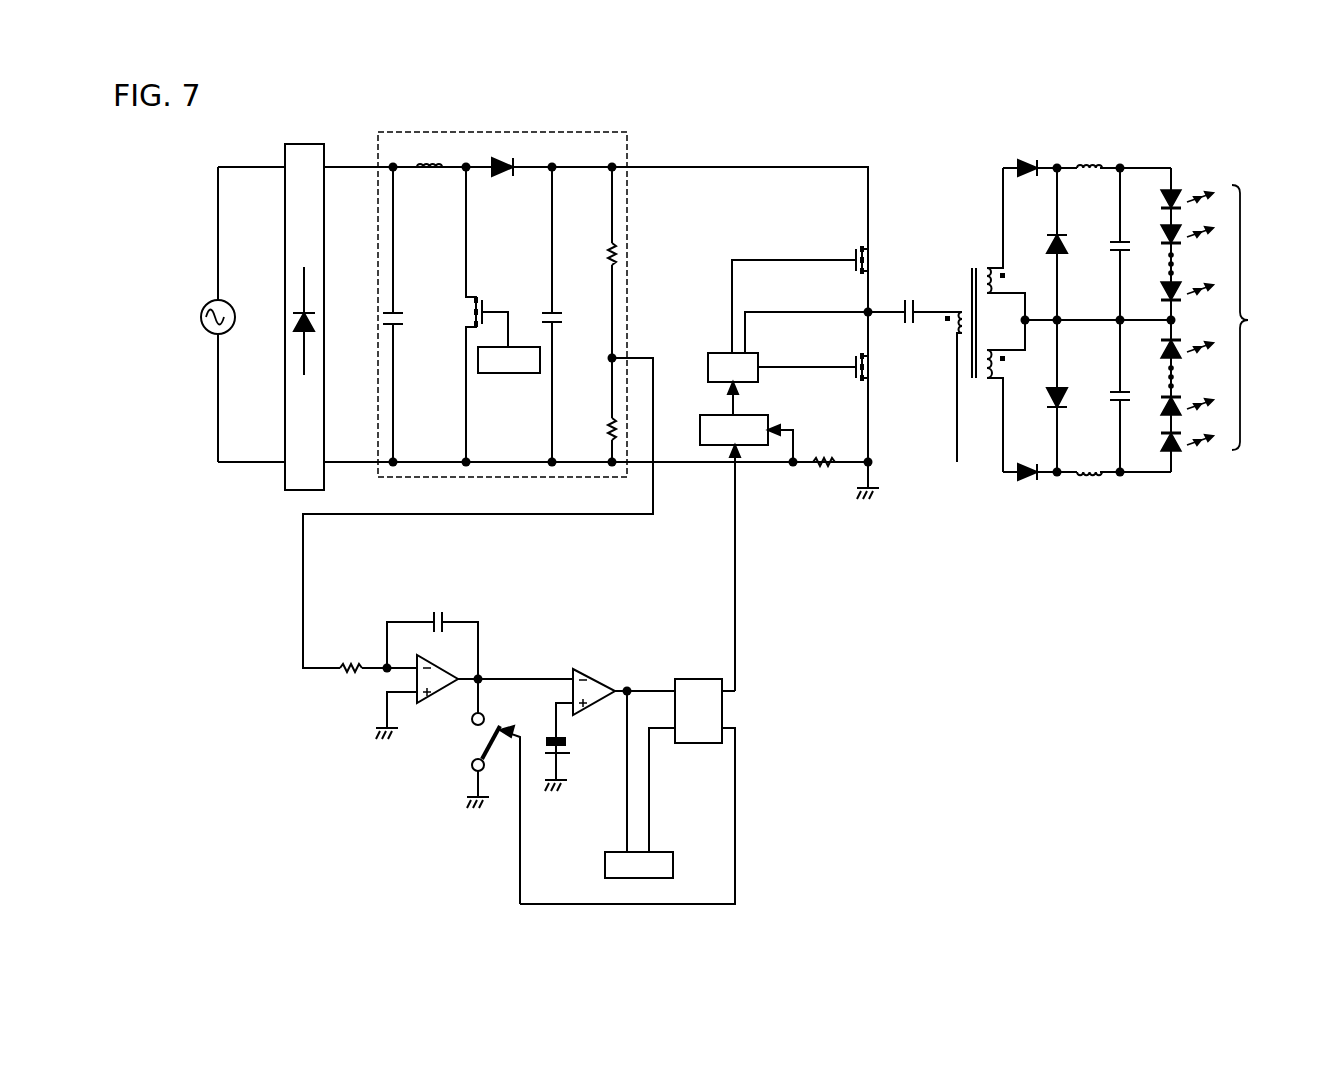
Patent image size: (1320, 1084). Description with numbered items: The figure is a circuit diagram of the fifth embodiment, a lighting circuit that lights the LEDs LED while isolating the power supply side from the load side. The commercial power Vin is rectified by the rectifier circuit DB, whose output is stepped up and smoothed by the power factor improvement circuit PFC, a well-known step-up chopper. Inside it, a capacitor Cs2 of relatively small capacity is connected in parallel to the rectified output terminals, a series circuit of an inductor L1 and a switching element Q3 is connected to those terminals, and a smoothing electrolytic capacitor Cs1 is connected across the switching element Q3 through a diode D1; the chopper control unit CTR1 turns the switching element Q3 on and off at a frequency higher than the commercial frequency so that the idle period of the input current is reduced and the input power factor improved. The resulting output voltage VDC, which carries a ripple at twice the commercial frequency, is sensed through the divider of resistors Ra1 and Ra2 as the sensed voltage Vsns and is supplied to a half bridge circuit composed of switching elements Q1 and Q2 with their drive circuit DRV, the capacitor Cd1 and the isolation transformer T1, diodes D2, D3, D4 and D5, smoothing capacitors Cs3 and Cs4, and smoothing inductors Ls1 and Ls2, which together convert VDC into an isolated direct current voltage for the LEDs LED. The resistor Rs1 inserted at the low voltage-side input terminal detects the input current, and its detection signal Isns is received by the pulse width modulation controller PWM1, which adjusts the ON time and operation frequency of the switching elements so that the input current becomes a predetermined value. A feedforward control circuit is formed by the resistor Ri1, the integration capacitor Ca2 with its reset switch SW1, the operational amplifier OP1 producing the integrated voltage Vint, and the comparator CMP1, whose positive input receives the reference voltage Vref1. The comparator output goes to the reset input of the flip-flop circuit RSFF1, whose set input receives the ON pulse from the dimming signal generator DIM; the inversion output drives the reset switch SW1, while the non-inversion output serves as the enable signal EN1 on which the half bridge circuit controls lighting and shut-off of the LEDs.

The commercial power Vin is at (199, 317).
The rectifier circuit DB is at (304, 306).
The power factor improvement circuit PFC is at (502, 294).
The capacitor Cs2 is at (408, 314).
The inductor L1 is at (429, 153).
The diode D1 is at (509, 158).
The switching element Q3 is at (473, 314).
The chopper control unit CTR1 is at (509, 360).
The electrolytic capacitor Cs1 is at (567, 314).
The resistor Ra1 is at (594, 262).
The resistor Ra2 is at (594, 410).
The output voltage VDC is at (612, 167).
The sensed voltage Vsns is at (486, 503).
The switching element Q1 is at (800, 288).
The switching element Q2 is at (813, 357).
The drive circuit DRV is at (733, 367).
The pulse width modulation controller PWM1 is at (734, 413).
The sensed current Isns is at (798, 436).
The enable signal EN1 is at (715, 568).
The resistor Rs1 is at (830, 451).
The capacitor Cd1 is at (915, 300).
The isolation transformer T1 is at (985, 320).
The diode D2 is at (1040, 157).
The smoothing inductor Ls1 is at (1123, 153).
The diode D3 is at (1043, 244).
The smoothing capacitor Cs3 is at (1101, 244).
The diode D4 is at (1043, 396).
The smoothing capacitor Cs4 is at (1101, 396).
The diode D5 is at (1040, 483).
The smoothing inductor Ls2 is at (1123, 487).
The LEDs LED is at (1226, 320).
The resistor Ri1 is at (376, 679).
The integration capacitor Ca2 is at (432, 634).
The operational amplifier OP1 is at (474, 692).
The integrator output voltage Vint is at (485, 662).
The reset switch SW1 is at (474, 791).
The comparator CMP1 is at (620, 681).
The reference voltage Vref1 is at (581, 747).
The flip-flop circuit RSFF1 is at (627, 781).
The dimming signal generator DIM is at (636, 784).